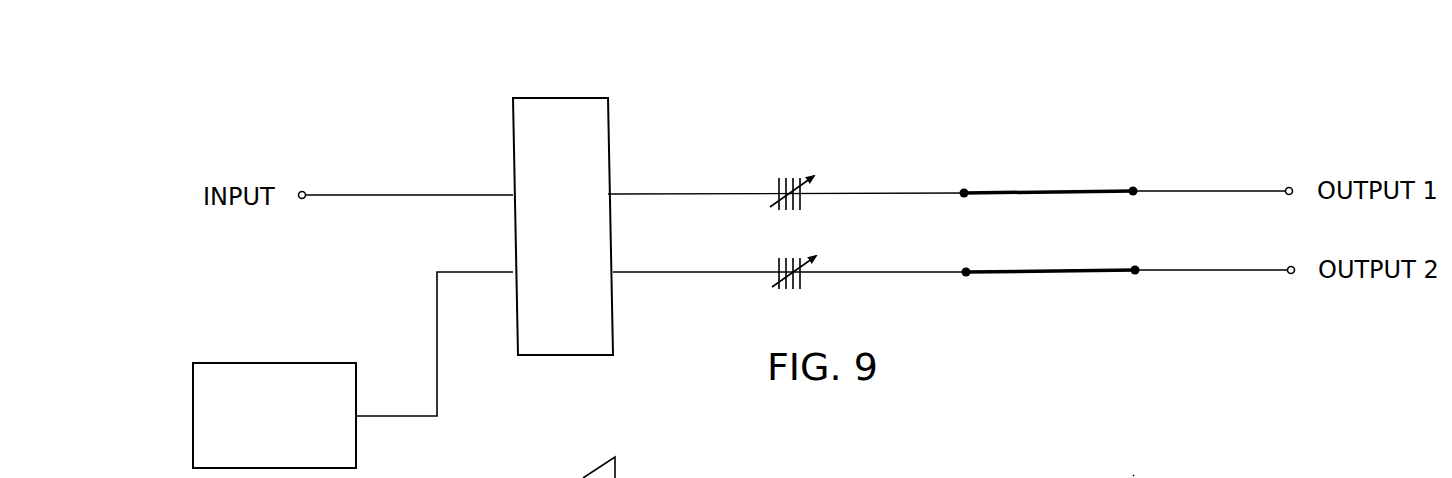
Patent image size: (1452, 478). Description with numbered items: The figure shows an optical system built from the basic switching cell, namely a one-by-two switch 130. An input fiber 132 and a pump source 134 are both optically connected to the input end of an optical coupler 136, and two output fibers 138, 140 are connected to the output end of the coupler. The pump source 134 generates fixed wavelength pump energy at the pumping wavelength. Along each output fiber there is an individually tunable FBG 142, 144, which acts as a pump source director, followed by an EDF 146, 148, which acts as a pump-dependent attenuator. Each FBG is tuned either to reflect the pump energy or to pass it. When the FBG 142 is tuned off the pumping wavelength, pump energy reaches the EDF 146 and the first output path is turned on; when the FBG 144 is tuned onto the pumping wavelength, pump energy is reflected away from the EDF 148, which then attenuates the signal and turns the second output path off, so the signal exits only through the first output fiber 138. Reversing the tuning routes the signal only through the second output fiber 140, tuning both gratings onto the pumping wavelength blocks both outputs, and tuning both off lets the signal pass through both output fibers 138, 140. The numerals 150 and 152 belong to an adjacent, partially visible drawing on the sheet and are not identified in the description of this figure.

The 1×2 switch 130 is at (1098, 143).
The input fiber 132 is at (357, 195).
The pump source 134 is at (221, 363).
The optical coupler 136 is at (552, 98).
The output fiber 138 is at (1208, 177).
The output fiber 140 is at (1210, 255).
The tunable FBG 142 is at (791, 179).
The tunable FBG 144 is at (793, 258).
The EDF 146 is at (1015, 192).
The EDF 148 is at (1017, 271).
The optical device 150 is at (1136, 472).
The element 152 is at (543, 477).